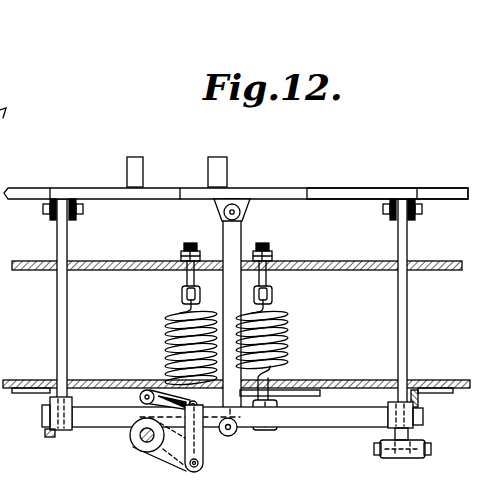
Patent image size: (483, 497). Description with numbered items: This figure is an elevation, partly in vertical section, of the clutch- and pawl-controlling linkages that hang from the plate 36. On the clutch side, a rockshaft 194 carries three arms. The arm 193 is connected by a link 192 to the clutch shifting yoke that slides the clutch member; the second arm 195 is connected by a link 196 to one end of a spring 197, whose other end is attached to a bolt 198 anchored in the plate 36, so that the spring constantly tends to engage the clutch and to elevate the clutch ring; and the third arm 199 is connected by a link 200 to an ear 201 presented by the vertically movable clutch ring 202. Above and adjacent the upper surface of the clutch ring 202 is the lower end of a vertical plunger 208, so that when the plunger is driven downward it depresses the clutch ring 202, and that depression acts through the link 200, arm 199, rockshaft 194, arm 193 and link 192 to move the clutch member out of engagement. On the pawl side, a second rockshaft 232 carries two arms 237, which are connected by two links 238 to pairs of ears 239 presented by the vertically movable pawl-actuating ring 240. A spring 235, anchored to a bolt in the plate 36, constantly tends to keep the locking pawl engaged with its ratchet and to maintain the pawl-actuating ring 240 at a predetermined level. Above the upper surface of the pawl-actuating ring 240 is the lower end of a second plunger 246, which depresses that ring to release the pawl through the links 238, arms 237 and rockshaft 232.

The plate 36 is at (136, 254).
The link 192 is at (305, 397).
The arm 193 is at (140, 398).
The rockshaft 194 is at (139, 449).
The second arm 195 is at (174, 456).
The link 196 is at (205, 445).
The spring 197 is at (168, 340).
The bolt 198 is at (185, 292).
The third arm 199 is at (233, 432).
The link 200 is at (242, 231).
The ear 201 is at (222, 212).
The clutch ring 202 is at (273, 193).
The vertical plunger 208 is at (222, 170).
The rockshaft 232 is at (93, 420).
The spring 235 is at (288, 336).
The arms 237 is at (85, 377).
The links 238 is at (63, 295).
The ears 239 is at (70, 219).
The pawl-actuating ring 240 is at (432, 193).
The plunger 246 is at (152, 154).